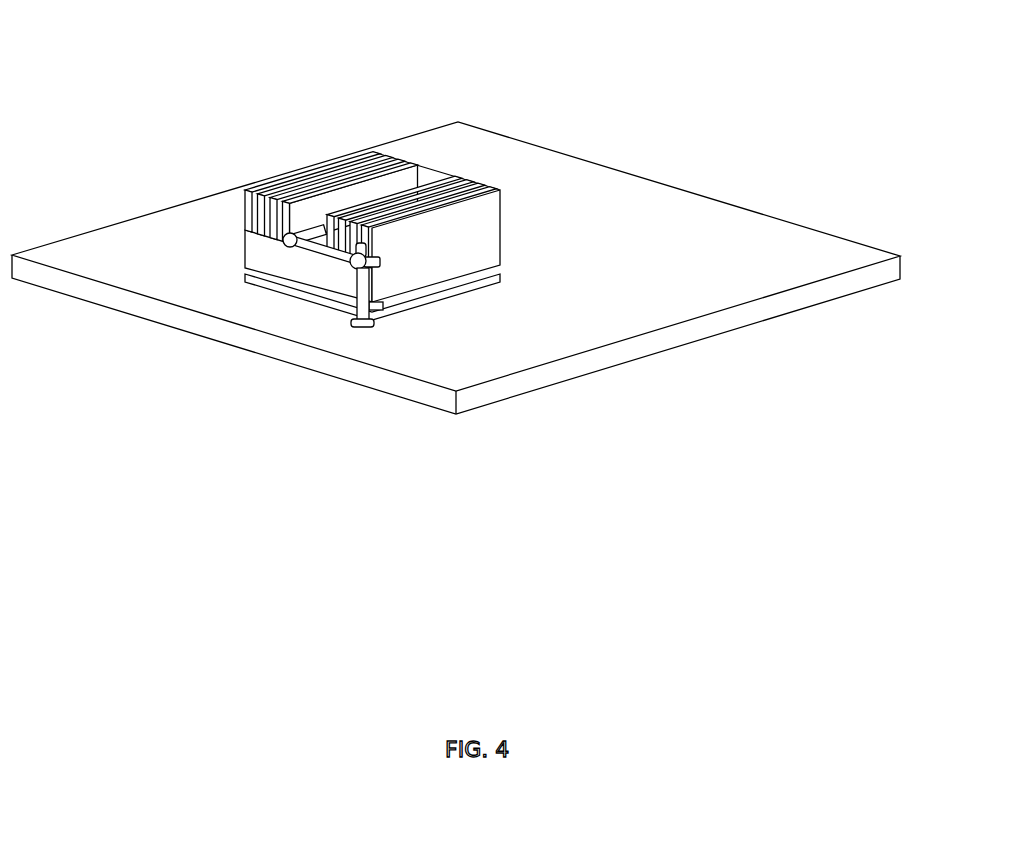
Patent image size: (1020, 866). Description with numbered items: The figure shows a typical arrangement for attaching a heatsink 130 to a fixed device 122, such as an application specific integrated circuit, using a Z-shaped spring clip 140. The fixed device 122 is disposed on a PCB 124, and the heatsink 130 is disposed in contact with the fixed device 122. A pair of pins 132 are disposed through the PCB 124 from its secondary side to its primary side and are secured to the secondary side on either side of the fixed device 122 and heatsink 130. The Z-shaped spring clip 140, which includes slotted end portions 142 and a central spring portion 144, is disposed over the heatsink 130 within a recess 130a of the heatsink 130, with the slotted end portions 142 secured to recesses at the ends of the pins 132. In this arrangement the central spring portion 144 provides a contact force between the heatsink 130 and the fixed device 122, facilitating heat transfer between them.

The fixed device 122 is at (449, 321).
The PCB 124 is at (813, 332).
The heatsink 130 is at (371, 211).
The recess of the heatsink 130a is at (336, 190).
The pins 132 is at (340, 328).
The Z-shaped spring clip 140 is at (288, 270).
The slotted end portions 142 is at (334, 279).
The central spring portion 144 is at (295, 222).